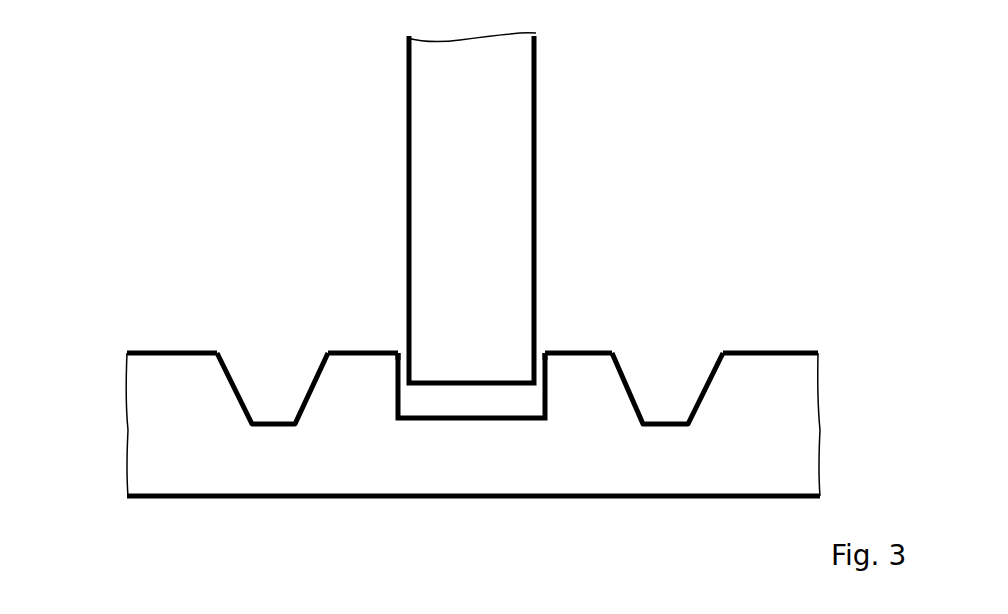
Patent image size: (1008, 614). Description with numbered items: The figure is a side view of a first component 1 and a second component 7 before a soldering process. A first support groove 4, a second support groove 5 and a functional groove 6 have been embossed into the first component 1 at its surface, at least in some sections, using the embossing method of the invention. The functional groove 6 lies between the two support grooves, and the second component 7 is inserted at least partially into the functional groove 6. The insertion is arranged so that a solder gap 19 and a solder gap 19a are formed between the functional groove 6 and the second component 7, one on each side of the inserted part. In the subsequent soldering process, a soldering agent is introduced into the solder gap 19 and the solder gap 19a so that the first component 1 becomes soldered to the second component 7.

The first component 1 is at (177, 405).
The first support groove 4 is at (252, 443).
The second support groove 5 is at (693, 443).
The functional groove 6 is at (488, 432).
The second component 7 is at (463, 185).
The solder gap 19 is at (401, 348).
The solder gap 19a is at (544, 348).